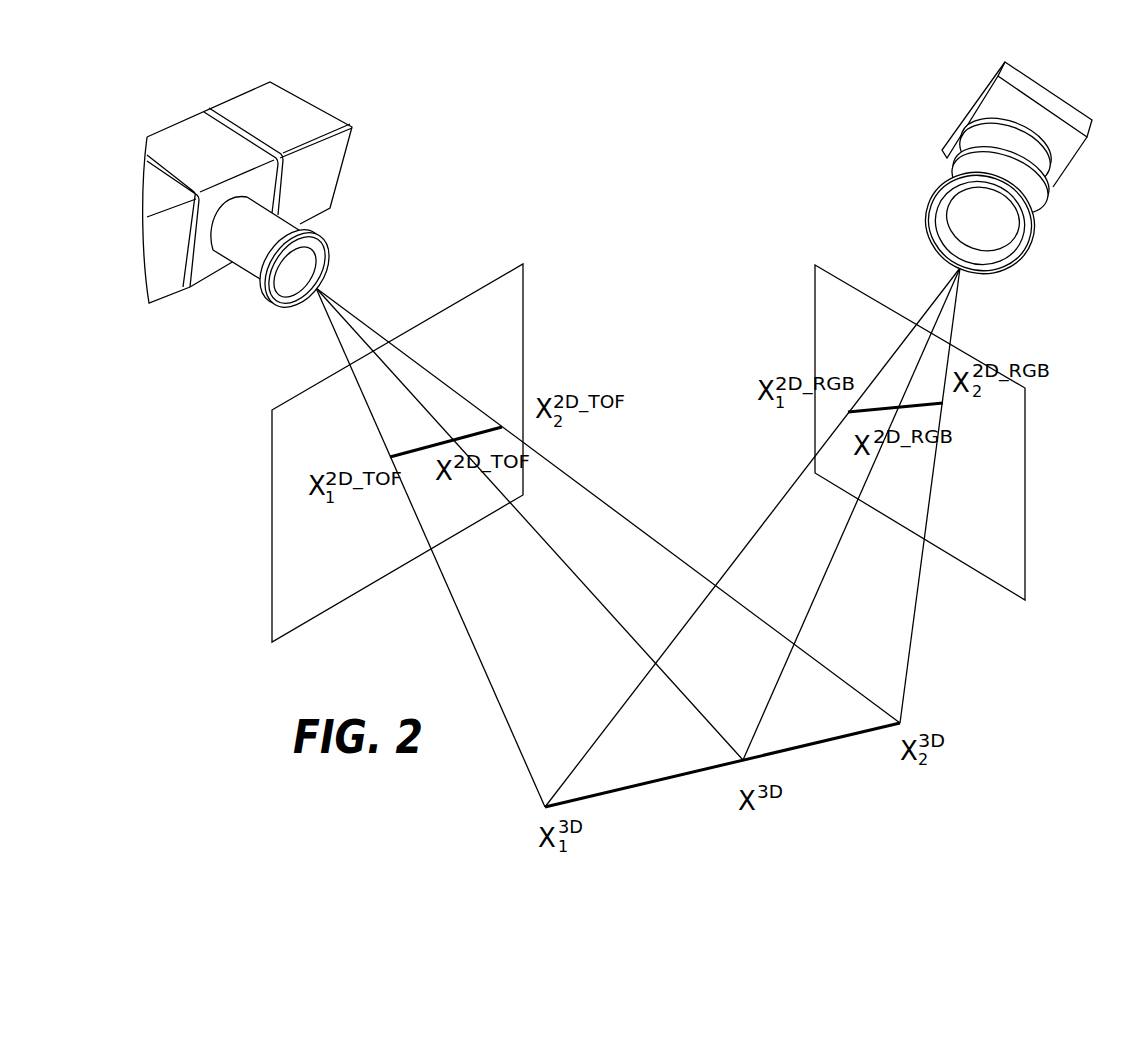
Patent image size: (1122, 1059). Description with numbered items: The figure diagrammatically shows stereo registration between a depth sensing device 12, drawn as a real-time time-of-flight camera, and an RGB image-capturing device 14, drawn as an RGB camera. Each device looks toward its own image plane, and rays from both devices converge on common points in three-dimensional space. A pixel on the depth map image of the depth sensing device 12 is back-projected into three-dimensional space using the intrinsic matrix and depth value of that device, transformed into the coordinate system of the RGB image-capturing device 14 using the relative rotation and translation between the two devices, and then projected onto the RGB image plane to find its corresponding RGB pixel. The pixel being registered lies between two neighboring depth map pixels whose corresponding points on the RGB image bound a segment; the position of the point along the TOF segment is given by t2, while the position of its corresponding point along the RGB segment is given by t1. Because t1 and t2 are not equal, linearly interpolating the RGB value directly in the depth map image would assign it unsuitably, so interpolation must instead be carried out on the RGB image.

The depth sensing device 12 is at (301, 100).
The RGB image-capturing device 14 is at (1068, 104).
The interpolation parameter t1 is at (895, 394).
The interpolation parameter t2 is at (446, 435).